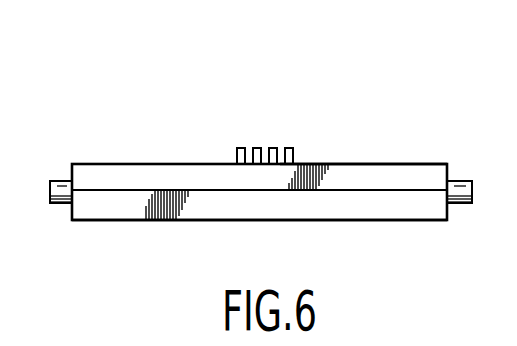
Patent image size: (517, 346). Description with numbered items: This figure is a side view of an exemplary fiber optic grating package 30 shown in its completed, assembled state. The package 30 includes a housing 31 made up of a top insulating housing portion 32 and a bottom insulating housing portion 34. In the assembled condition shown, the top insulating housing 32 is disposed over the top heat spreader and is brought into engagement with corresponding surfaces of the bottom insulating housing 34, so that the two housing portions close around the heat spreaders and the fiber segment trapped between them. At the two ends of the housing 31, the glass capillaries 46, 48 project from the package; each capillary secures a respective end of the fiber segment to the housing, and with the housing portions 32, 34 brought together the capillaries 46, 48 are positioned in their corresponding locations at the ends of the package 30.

The fiber optic grating package 30 is at (240, 108).
The housing 31 is at (350, 146).
The top insulating housing portion 32 is at (120, 164).
The bottom insulating housing portion 34 is at (75, 221).
The glass capillary 46 is at (59, 180).
The glass capillary 48 is at (458, 181).